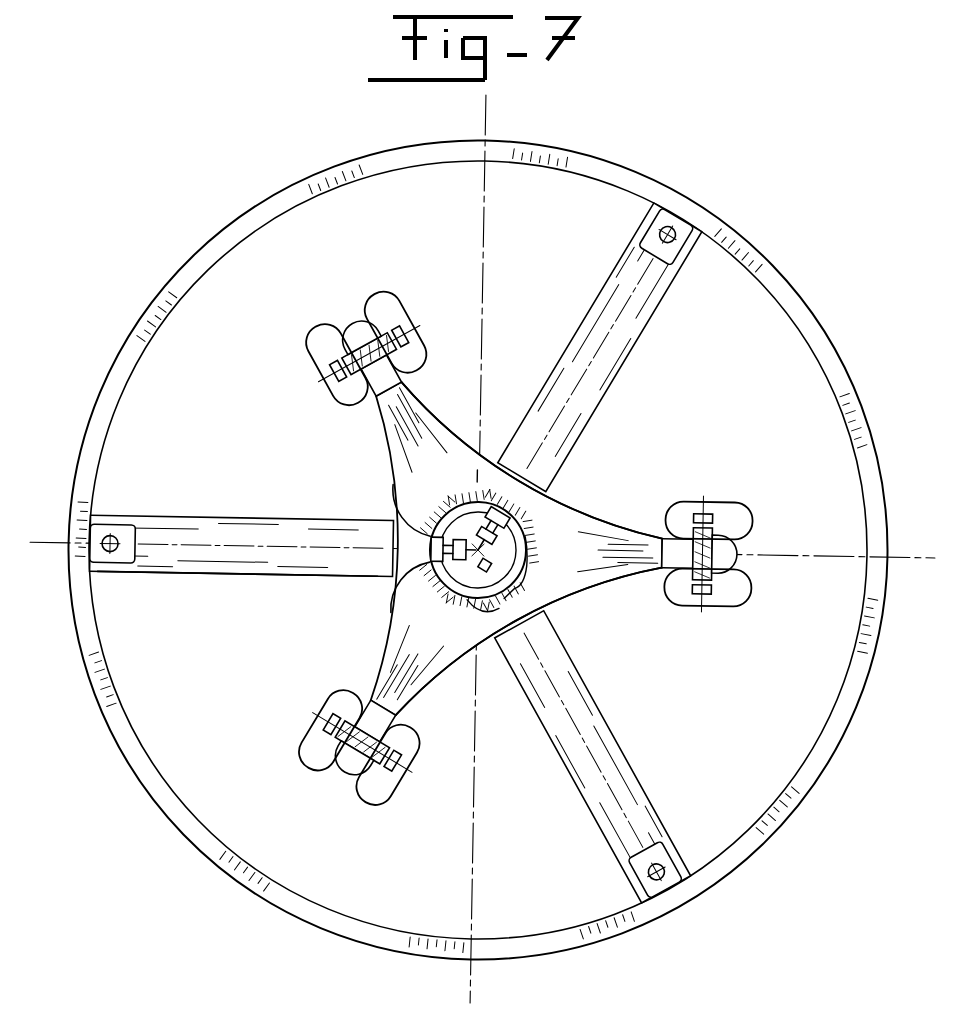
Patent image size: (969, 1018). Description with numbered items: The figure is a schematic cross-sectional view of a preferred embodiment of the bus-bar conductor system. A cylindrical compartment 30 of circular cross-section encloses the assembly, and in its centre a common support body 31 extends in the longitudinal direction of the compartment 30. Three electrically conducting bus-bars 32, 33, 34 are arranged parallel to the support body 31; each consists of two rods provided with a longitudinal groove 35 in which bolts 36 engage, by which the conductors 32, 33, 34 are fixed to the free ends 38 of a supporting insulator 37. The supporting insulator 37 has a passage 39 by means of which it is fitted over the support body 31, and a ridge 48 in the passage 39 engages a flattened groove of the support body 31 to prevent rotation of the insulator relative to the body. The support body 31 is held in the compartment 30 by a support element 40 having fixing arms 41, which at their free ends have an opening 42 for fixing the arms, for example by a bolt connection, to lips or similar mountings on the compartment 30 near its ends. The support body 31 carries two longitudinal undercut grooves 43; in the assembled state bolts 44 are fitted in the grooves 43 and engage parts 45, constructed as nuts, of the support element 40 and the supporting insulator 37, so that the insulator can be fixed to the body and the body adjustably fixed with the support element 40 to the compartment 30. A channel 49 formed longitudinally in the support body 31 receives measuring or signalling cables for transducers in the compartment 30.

The cylindrical compartment 30 is at (572, 174).
The common support body 31 is at (532, 580).
The bus-bar 32 is at (349, 300).
The bus-bar 33 is at (803, 519).
The bus-bar 34 is at (308, 779).
The longitudinal groove 35 is at (746, 486).
The bolt 36 is at (398, 330).
The supporting insulator 37 is at (546, 504).
The free end 38 is at (404, 390).
The passage 39 is at (472, 482).
The support element 40 is at (326, 510).
The fixing arm 41 is at (623, 345).
The opening 42 is at (672, 245).
The undercut groove 43 is at (531, 526).
The bolt 44 is at (436, 588).
The nut 45 is at (394, 490).
The ridge 48 is at (548, 612).
The channel 49 is at (489, 602).